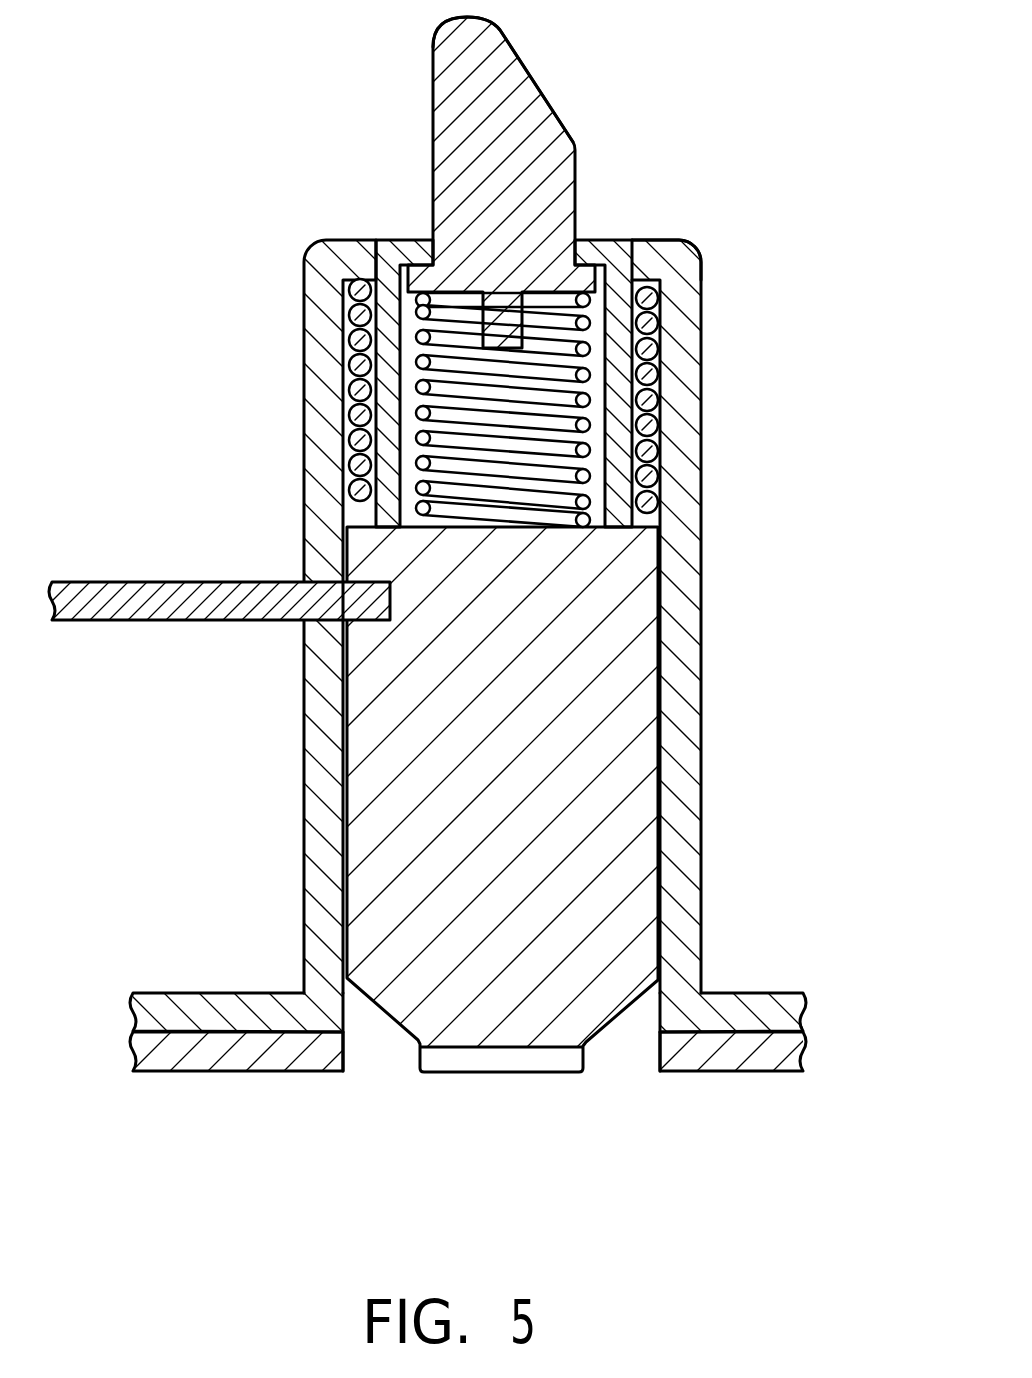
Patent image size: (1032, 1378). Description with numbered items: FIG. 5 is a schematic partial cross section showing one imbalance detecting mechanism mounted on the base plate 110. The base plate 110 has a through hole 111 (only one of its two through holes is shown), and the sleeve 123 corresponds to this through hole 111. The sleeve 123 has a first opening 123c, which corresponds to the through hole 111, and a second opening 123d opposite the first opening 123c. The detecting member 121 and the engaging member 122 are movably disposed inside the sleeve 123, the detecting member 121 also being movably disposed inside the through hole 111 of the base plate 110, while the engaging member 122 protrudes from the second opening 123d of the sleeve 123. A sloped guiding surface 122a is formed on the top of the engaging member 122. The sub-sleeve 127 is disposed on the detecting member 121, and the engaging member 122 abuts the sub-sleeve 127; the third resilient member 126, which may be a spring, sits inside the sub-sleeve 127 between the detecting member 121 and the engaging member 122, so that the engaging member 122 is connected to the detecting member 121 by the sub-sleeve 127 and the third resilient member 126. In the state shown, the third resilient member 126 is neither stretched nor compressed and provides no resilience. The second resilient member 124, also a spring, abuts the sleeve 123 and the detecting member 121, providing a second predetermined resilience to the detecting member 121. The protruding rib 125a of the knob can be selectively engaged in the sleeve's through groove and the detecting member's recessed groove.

The base plate 110 is at (233, 1073).
The through hole 111 is at (375, 1046).
The detecting member 121 is at (633, 742).
The engaging member 122 is at (434, 117).
The sloped guiding surface 122a is at (528, 68).
The sleeve 123 is at (702, 650).
The first opening 123c is at (670, 993).
The second opening 123d is at (684, 243).
The second resilient member 124 is at (353, 360).
The protruding rib 125a is at (160, 588).
The third resilient member 126 is at (596, 345).
The sub-sleeve 127 is at (618, 395).